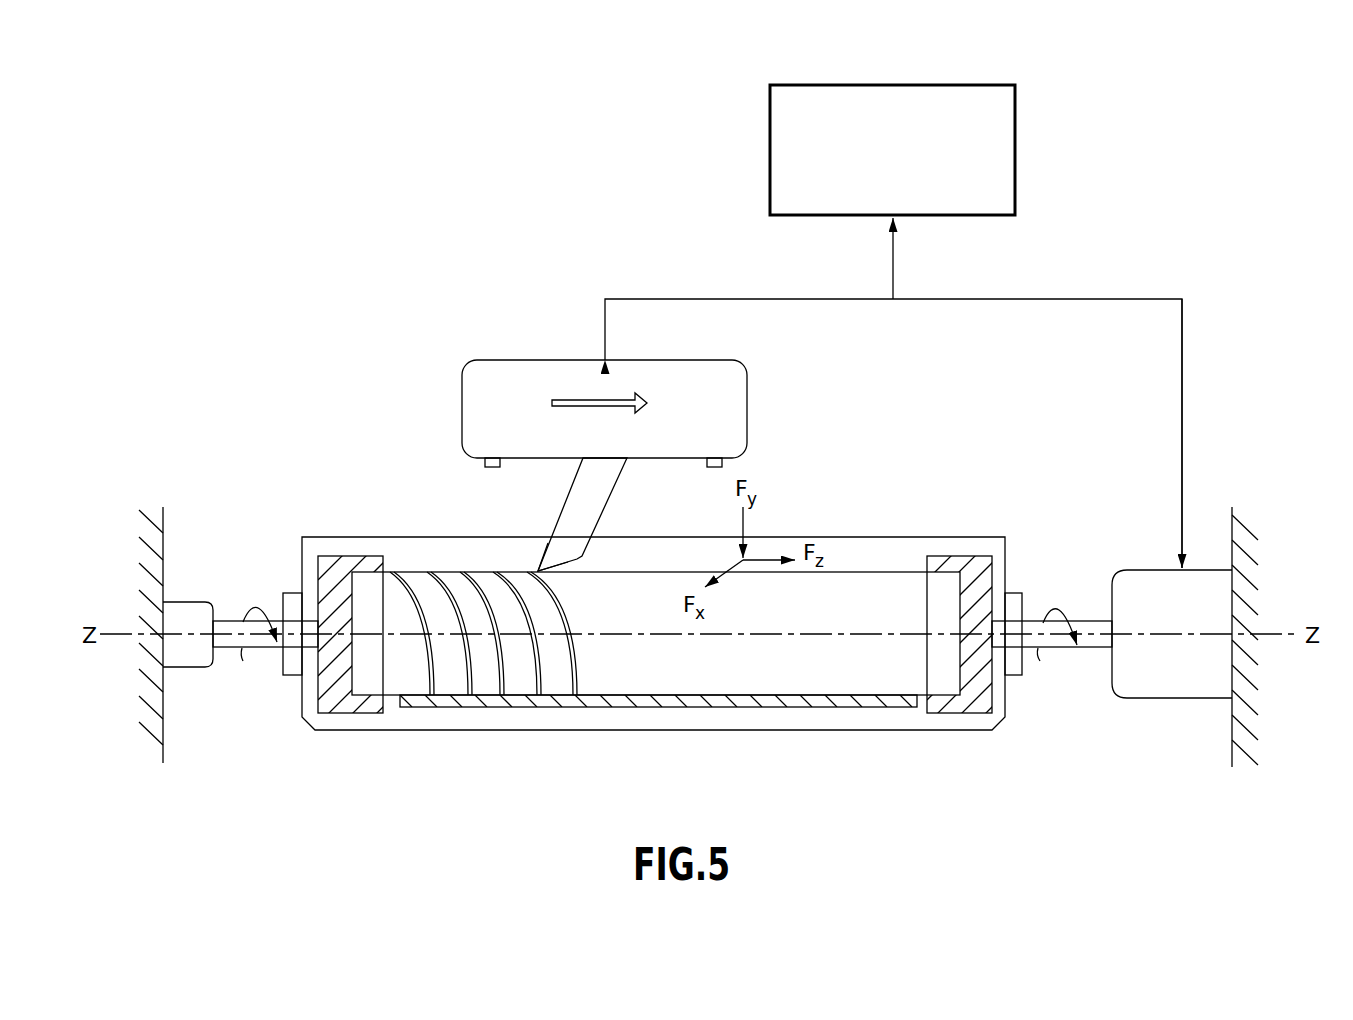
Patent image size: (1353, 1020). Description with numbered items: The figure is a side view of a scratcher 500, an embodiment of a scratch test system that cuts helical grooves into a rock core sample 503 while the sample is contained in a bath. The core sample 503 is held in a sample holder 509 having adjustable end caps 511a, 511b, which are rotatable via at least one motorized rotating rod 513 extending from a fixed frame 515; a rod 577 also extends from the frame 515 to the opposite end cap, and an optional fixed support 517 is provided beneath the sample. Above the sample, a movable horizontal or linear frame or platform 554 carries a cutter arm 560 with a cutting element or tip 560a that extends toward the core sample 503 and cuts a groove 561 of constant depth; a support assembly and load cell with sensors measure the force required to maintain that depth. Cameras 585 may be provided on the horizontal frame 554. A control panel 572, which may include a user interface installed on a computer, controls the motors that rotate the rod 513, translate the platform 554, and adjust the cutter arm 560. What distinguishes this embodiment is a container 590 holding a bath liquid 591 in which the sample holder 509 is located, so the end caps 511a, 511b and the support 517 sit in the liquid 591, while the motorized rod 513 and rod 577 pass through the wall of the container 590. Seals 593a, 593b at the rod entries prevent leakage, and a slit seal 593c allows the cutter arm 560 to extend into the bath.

The scratcher 500 is at (342, 380).
The control panel 572 is at (975, 85).
The horizontal frame platform 554 is at (533, 360).
The cameras 585 is at (483, 463).
The cutter arm 560 is at (607, 482).
The cutting tip 560a is at (557, 548).
The container 590 is at (340, 732).
The sample holder 509 is at (952, 527).
The bath liquid 591 is at (432, 718).
The slit seal 593c is at (853, 555).
The core sample 503 is at (722, 682).
The fixed support 517 is at (822, 710).
The groove 561 is at (571, 710).
The adjustable end cap 511b is at (342, 556).
The adjustable end cap 511a is at (972, 567).
The seal 593b is at (292, 592).
The seal 593a is at (1016, 593).
The rod 577 is at (227, 640).
The motorized rotating rod 513 is at (1095, 640).
The fixed frame 515 is at (153, 743).